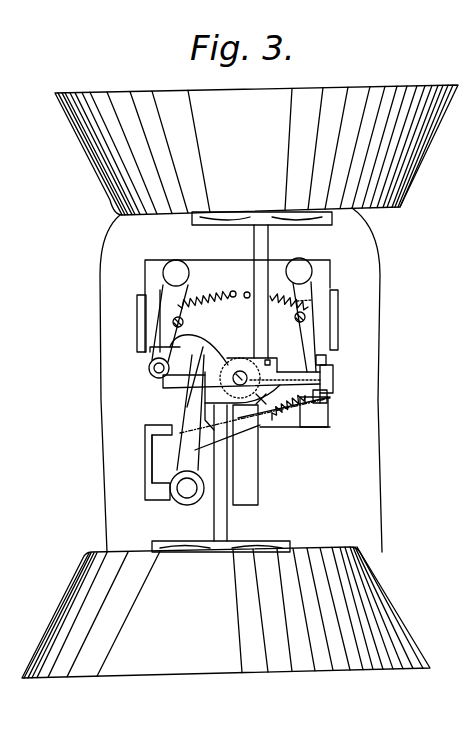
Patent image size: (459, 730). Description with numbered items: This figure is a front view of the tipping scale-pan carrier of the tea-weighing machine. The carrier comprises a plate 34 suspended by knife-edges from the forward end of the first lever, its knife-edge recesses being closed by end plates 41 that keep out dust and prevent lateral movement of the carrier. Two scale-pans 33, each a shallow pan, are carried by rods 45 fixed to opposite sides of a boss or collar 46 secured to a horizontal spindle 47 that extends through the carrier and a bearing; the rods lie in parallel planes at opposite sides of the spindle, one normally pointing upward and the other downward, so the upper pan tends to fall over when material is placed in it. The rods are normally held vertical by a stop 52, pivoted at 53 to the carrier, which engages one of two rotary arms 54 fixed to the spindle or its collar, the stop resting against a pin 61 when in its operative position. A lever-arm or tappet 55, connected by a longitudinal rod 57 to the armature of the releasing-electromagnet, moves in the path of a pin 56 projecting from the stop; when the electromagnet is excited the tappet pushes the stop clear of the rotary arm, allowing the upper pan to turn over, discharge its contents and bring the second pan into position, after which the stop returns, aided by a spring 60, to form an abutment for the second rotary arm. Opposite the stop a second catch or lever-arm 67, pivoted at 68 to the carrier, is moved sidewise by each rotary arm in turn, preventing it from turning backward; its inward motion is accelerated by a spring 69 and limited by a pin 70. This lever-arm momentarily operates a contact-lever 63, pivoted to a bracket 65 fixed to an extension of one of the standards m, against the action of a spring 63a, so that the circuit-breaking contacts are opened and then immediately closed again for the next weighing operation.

The scale-pan 33 is at (232, 112).
The rod 45 is at (280, 248).
The carrier-plate 34 is at (250, 470).
The pivot of the stop 53 is at (176, 262).
The pivot of the lever-arm 68 is at (308, 268).
The end plate 41 is at (137, 312).
The stop 52 is at (150, 352).
The pin 56 is at (150, 372).
The spring 60 is at (214, 310).
The pin 61 is at (188, 326).
The spring 69 is at (289, 322).
The pin 70 is at (293, 327).
The boss or collar 46 is at (215, 366).
The rotary arm 54 is at (180, 386).
The lever-arm 67 is at (326, 358).
The contact-lever 63 is at (333, 380).
The lever-arm or tappet 55 is at (190, 408).
The longitudinal rod 57 is at (187, 498).
The standard m is at (145, 432).
The horizontal spindle 47 is at (255, 422).
The bracket 65 is at (282, 424).
The spring 63a is at (300, 412).